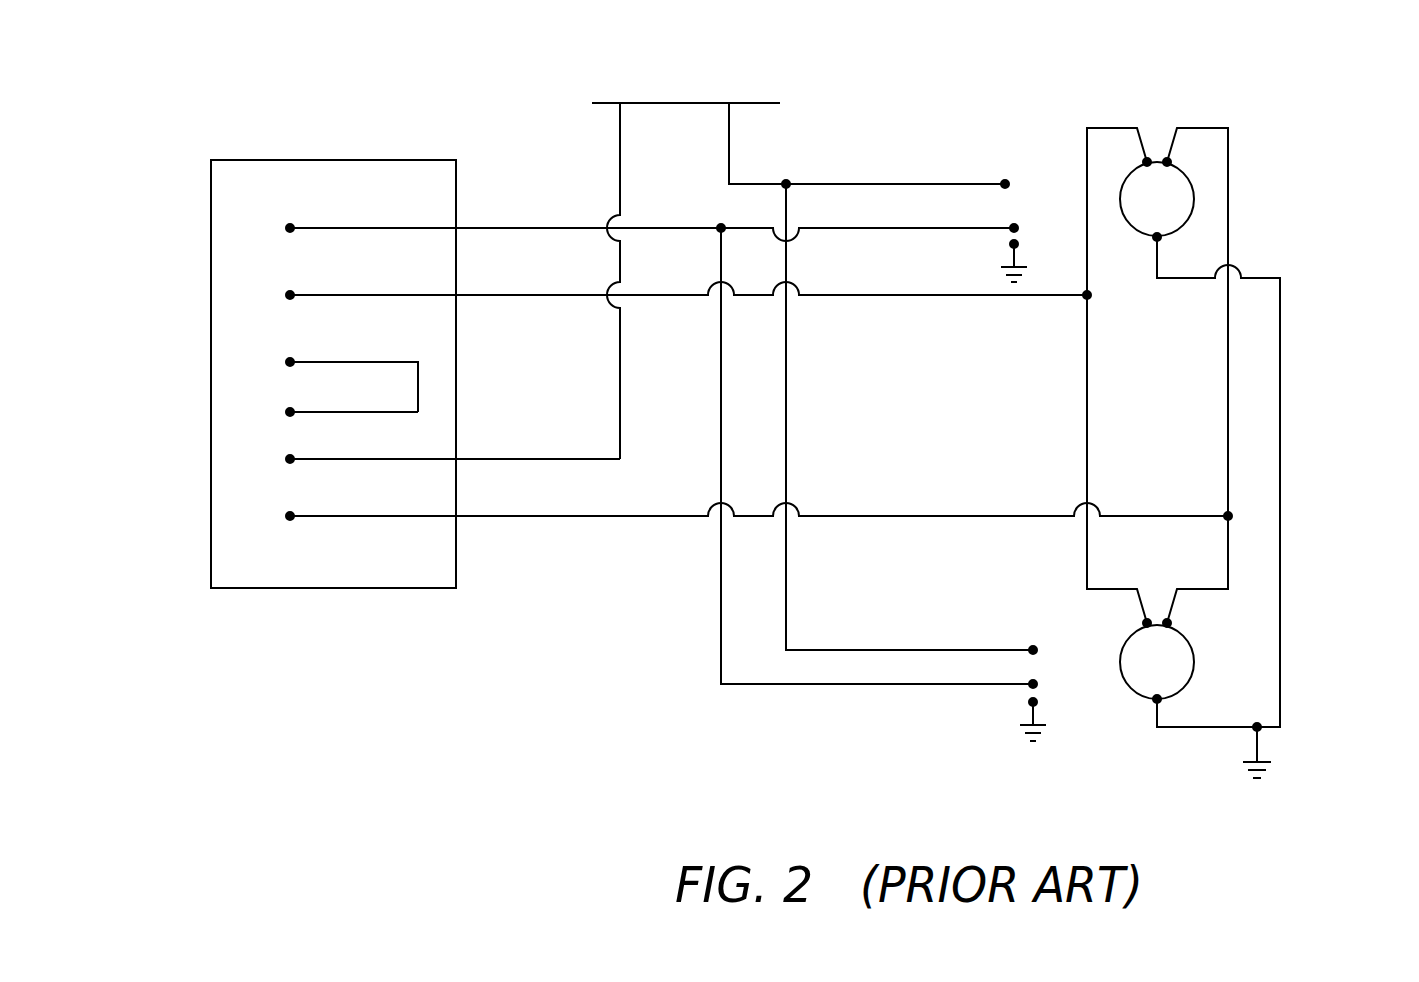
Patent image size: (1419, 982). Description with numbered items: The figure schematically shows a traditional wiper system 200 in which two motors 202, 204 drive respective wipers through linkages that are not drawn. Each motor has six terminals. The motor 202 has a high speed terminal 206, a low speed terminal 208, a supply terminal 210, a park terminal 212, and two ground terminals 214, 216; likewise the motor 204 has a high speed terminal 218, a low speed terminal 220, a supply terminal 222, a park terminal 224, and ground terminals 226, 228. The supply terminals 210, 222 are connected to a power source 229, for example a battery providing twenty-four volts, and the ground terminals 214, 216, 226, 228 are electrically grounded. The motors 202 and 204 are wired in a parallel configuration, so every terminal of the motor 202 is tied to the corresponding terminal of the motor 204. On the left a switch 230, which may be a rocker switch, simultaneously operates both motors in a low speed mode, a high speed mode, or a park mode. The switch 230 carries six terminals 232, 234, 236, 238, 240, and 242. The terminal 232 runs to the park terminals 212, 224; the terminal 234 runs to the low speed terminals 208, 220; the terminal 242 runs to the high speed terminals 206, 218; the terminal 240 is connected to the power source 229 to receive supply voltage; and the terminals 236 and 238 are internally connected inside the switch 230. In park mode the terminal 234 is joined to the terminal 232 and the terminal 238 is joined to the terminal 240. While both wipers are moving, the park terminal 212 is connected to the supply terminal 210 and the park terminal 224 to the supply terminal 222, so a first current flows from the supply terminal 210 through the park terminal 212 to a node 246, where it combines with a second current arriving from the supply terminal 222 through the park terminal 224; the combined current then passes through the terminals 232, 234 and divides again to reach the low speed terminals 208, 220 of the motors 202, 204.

The wiper system 200 is at (1308, 70).
The motor 202 is at (1157, 322).
The motor 204 is at (1157, 497).
The high speed terminal 206 is at (1167, 162).
The low speed terminal 208 is at (1147, 162).
The supply terminal 210 is at (1005, 184).
The park terminal 212 is at (1014, 228).
The ground terminal 214 is at (1014, 246).
The ground terminal 216 is at (1157, 238).
The high speed terminal 218 is at (1167, 623).
The low speed terminal 220 is at (1147, 623).
The supply terminal 222 is at (1033, 650).
The park terminal 224 is at (1033, 684).
The ground terminal 226 is at (1033, 702).
The ground terminal 228 is at (1157, 700).
The power source 229 is at (756, 103).
The switch 230 is at (346, 160).
The terminal 232 is at (290, 228).
The terminal 234 is at (290, 295).
The terminal 236 is at (290, 362).
The terminal 238 is at (290, 412).
The terminal 240 is at (290, 459).
The terminal 242 is at (290, 516).
The node 246 is at (721, 228).